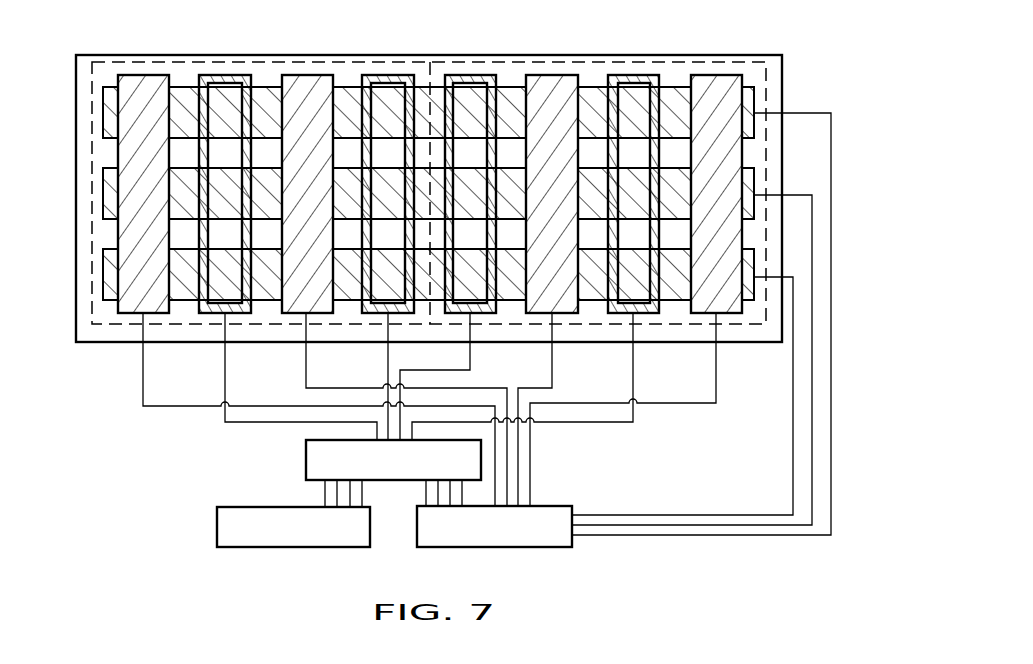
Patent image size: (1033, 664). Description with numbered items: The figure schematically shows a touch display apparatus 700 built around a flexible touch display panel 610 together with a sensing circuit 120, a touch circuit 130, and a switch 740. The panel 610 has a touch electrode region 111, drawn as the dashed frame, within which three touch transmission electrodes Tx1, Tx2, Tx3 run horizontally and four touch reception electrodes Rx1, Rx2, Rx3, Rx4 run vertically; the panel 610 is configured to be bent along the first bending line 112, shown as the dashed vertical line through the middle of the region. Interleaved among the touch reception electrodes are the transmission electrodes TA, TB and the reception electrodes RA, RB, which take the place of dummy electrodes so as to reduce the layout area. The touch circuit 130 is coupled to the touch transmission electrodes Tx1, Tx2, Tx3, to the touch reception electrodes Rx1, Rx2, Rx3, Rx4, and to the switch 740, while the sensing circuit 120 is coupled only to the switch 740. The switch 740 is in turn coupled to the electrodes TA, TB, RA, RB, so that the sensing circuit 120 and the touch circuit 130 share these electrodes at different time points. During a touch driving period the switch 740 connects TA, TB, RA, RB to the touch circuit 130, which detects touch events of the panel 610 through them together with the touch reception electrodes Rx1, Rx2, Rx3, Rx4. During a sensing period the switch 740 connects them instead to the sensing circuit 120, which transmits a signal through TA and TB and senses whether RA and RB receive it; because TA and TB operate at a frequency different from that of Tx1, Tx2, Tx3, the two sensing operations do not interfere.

The touch display apparatus 700 is at (128, 567).
The flexible touch display panel 610 is at (130, 55).
The touch electrode region 111 is at (727, 62).
The first bending line 112 is at (432, 66).
The touch transmission electrode Tx1 is at (103, 113).
The touch transmission electrode Tx2 is at (103, 195).
The touch transmission electrode Tx3 is at (103, 277).
The touch reception electrode Rx1 is at (153, 313).
The touch reception electrode Rx2 is at (318, 313).
The touch reception electrode Rx3 is at (540, 313).
The touch reception electrode Rx4 is at (702, 313).
The reception electrode RA is at (364, 75).
The reception electrode RB is at (200, 75).
The transmission electrode TA is at (486, 75).
The transmission electrode TB is at (652, 75).
The switch 740 is at (306, 460).
The sensing circuit 120 is at (217, 522).
The touch circuit 130 is at (527, 548).